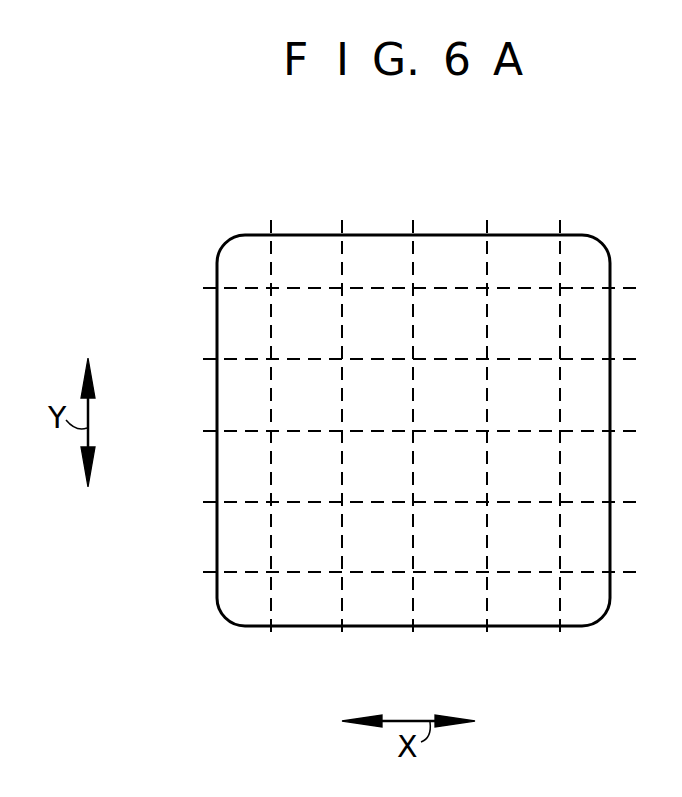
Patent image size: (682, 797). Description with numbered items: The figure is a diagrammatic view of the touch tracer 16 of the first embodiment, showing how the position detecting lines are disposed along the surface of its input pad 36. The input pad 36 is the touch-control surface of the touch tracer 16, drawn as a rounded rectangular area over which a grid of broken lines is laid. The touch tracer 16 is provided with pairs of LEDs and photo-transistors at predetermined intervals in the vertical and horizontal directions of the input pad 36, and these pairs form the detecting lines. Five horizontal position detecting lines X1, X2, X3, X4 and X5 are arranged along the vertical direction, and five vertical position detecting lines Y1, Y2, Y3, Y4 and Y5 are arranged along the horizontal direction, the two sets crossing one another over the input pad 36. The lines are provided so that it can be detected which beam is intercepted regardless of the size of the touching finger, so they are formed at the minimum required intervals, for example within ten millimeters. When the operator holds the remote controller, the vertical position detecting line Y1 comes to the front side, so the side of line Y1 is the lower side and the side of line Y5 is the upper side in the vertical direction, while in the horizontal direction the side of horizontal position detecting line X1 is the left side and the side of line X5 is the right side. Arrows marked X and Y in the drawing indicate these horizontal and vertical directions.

The touch tracer 16 is at (608, 220).
The input pad 36 is at (413, 453).
The horizontal position detecting line X1 is at (288, 453).
The horizontal position detecting line X2 is at (355, 453).
The horizontal position detecting line X3 is at (422, 453).
The horizontal position detecting line X4 is at (495, 453).
The horizontal position detecting line X5 is at (567, 453).
The vertical position detecting line Y1 is at (393, 574).
The vertical position detecting line Y2 is at (393, 504).
The vertical position detecting line Y3 is at (393, 433).
The vertical position detecting line Y4 is at (393, 361).
The vertical position detecting line Y5 is at (393, 290).